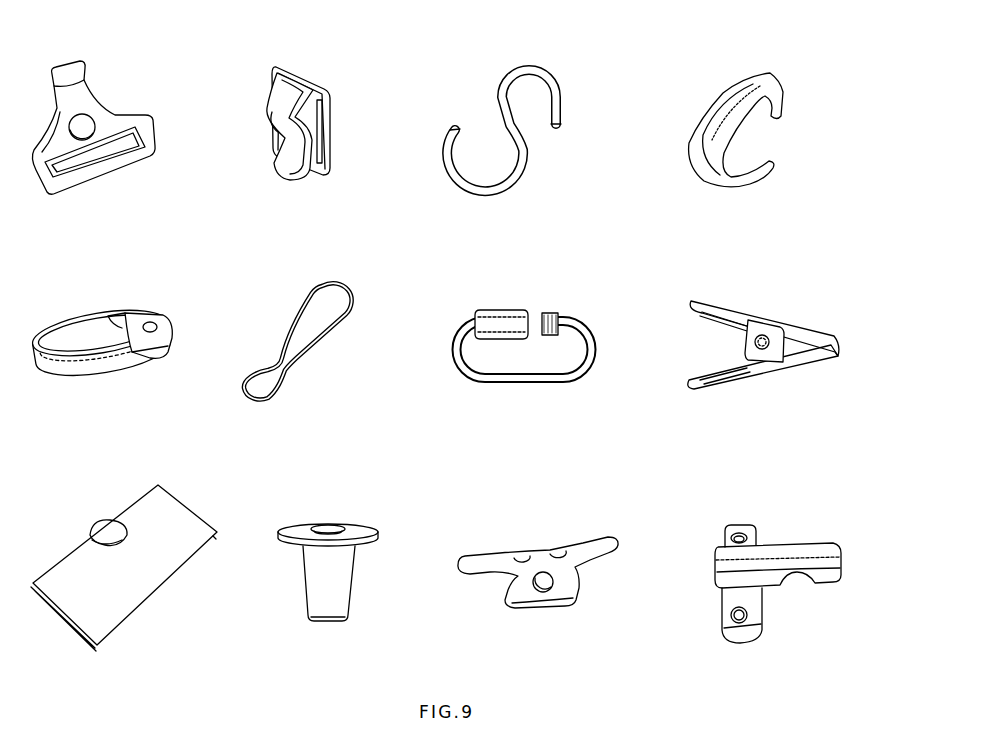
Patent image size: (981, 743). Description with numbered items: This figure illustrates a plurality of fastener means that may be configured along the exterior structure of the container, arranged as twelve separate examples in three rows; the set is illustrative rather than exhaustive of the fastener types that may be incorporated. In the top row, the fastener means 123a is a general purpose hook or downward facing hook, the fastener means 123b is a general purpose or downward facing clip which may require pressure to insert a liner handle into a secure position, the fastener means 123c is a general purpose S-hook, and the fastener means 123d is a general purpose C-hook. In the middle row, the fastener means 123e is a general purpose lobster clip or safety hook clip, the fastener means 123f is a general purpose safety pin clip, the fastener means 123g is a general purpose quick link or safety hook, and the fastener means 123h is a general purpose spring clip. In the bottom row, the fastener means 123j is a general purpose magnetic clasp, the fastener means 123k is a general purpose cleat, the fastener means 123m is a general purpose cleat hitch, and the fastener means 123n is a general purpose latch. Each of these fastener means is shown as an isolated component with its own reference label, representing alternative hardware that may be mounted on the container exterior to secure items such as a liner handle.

The fastener means (general purpose hook) 123a is at (120, 124).
The fastener means (general purpose clip) 123b is at (295, 90).
The fastener means (S-hook) 123c is at (555, 74).
The fastener means (C-hook) 123d is at (780, 87).
The fastener means (lobster clip) 123e is at (120, 327).
The fastener means (safety pin clip) 123f is at (337, 284).
The fastener means (quick link) 123g is at (573, 325).
The fastener means (spring clip) 123h is at (770, 317).
The fastener means (magnetic clasp) 123j is at (170, 510).
The fastener means (cleat) 123k is at (355, 530).
The fastener means (cleat hitch) 123m is at (588, 549).
The fastener means (latch) 123n is at (807, 553).